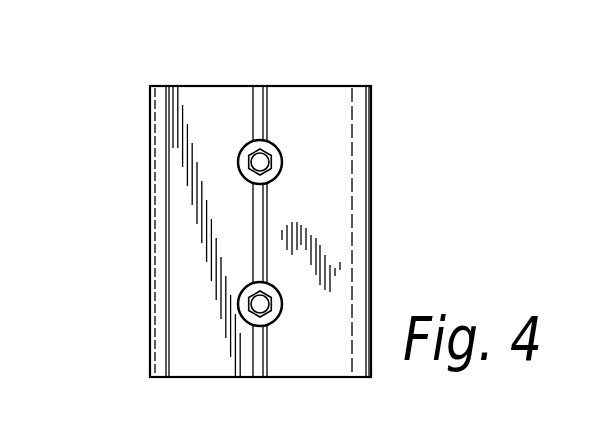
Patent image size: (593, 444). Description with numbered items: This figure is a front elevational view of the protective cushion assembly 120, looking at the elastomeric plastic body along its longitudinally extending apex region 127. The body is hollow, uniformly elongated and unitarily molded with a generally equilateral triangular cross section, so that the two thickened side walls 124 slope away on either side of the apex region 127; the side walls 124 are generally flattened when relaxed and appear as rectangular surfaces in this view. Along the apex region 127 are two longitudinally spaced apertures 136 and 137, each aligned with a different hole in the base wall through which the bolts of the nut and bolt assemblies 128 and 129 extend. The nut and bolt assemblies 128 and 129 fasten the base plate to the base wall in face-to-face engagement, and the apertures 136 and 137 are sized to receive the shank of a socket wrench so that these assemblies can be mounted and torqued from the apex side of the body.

The protective cushion assembly 120 is at (165, 80).
The side walls 124 is at (197, 204).
The apex region 127 is at (257, 96).
The nut and bolt assembly 128 is at (270, 152).
The aperture 136 is at (272, 160).
The aperture 137 is at (280, 304).
The nut and bolt assembly 129 is at (265, 316).